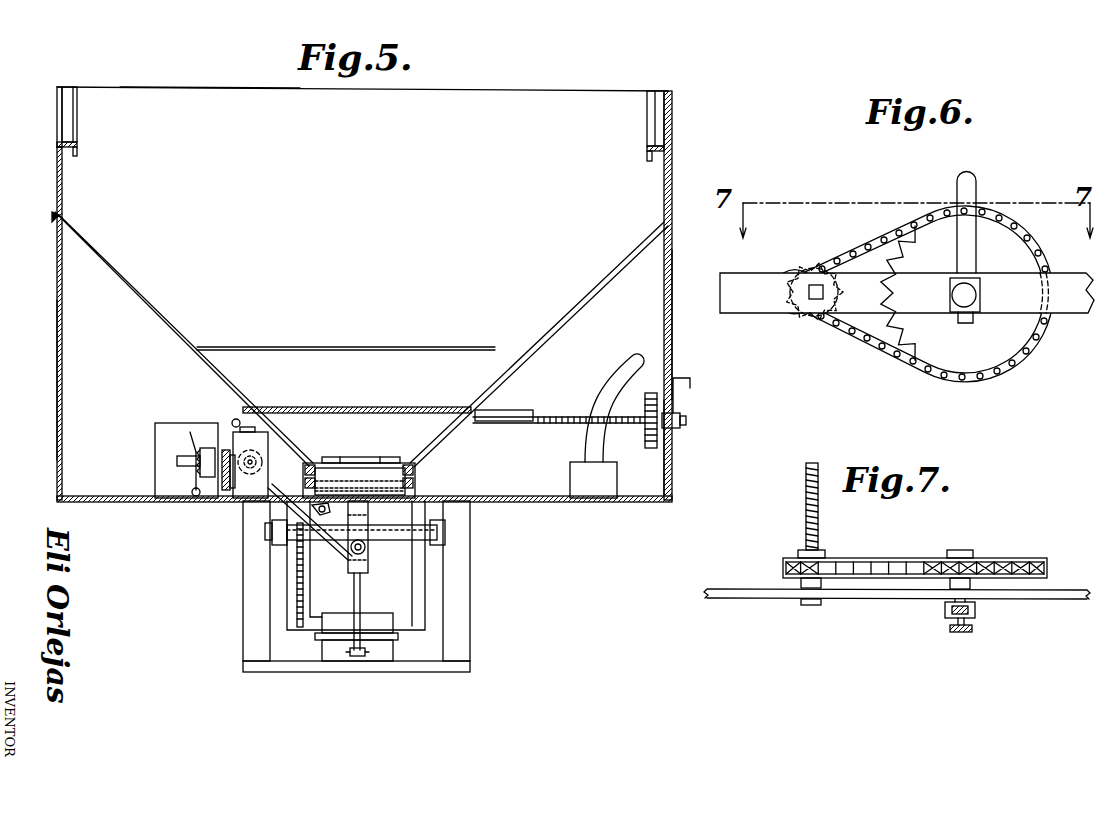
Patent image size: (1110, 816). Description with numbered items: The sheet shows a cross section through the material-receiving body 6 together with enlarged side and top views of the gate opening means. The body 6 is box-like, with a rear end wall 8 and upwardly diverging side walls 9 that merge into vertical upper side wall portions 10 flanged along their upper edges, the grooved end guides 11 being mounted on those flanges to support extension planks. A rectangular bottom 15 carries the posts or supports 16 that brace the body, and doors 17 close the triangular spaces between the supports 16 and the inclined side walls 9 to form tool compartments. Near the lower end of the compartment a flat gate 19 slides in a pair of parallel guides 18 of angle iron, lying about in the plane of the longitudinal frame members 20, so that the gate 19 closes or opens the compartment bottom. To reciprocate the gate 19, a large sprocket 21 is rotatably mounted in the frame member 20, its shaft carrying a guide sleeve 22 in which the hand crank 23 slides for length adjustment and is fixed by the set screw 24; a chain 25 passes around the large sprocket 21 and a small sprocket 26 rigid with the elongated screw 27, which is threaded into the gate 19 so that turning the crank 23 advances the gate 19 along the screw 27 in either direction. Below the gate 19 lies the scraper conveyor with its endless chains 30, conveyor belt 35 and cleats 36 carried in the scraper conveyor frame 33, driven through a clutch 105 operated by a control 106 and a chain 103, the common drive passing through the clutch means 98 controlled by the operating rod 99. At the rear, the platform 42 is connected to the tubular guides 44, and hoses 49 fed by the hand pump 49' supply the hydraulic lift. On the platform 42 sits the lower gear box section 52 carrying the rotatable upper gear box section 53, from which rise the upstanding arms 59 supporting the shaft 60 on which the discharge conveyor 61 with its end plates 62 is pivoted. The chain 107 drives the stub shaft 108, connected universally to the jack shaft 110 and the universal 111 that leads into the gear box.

In FIG. 5, the material-receiving body 6 is at (125, 78).
In FIG. 5, the rear end wall 8 is at (200, 96).
In FIG. 5, the side walls 9 is at (138, 296).
In FIG. 5, the side walls 10 is at (61, 192).
In FIG. 5, the grooved end guides 11 is at (58, 113).
In FIG. 5, the rectangular bottom 15 is at (120, 501).
In FIG. 5, the posts or supports 16 is at (672, 336).
In FIG. 5, the doors 17 is at (57, 381).
In FIG. 5, the parallel guides 18 is at (366, 450).
In FIG. 5, the gate 19 is at (358, 407).
In FIG. 5, the frame members 20 is at (672, 445).
In FIG. 6, the frame members 20 is at (768, 315).
In FIG. 7, the frame members 20 is at (748, 598).
In FIG. 6, the large sprocket 21 is at (934, 358).
In FIG. 7, the large sprocket 21 is at (945, 558).
In FIG. 5, the guide sleeve 22 is at (681, 426).
In FIG. 6, the guide sleeve 22 is at (950, 292).
In FIG. 7, the guide sleeve 22 is at (945, 612).
In FIG. 5, the hand crank 23 is at (690, 380).
In FIG. 6, the hand crank 23 is at (977, 252).
In FIG. 7, the hand crank 23 is at (976, 612).
In FIG. 5, the set screw 24 is at (687, 419).
In FIG. 6, the set screw 24 is at (980, 297).
In FIG. 7, the set screw 24 is at (956, 633).
In FIG. 5, the chain 25 is at (645, 436).
In FIG. 6, the chain 25 is at (870, 243).
In FIG. 7, the chain 25 is at (890, 558).
In FIG. 6, the small sprocket 26 is at (832, 291).
In FIG. 7, the small sprocket 26 is at (783, 566).
In FIG. 5, the elongated screw 27 is at (551, 417).
In FIG. 6, the elongated screw 27 is at (809, 292).
In FIG. 7, the elongated screw 27 is at (806, 503).
In FIG. 5, the endless chains 30 is at (392, 465).
In FIG. 5, the scraper conveyor frame 33 is at (416, 482).
In FIG. 5, the conveyor belt 35 is at (320, 462).
In FIG. 5, the cleats 36 is at (340, 457).
In FIG. 5, the platform 42 is at (300, 672).
In FIG. 5, the tubular guides 44 is at (243, 612).
In FIG. 5, the hoses 49 is at (614, 401).
In FIG. 5, the hand pump 49' is at (610, 480).
In FIG. 5, the lower gear box section 52 is at (393, 653).
In FIG. 5, the upper gear box section 53 is at (386, 613).
In FIG. 5, the upstanding arms 59 is at (287, 580).
In FIG. 5, the shaft 60 is at (268, 528).
In FIG. 5, the discharge conveyor 61 is at (398, 541).
In FIG. 5, the end plates 62 is at (287, 536).
In FIG. 5, the clutch means 98 is at (233, 462).
In FIG. 5, the operating rod 99 is at (236, 420).
In FIG. 5, the chain 103 is at (218, 490).
In FIG. 5, the clutch 105 is at (198, 456).
In FIG. 5, the control 106 is at (188, 436).
In FIG. 5, the chain 107 is at (332, 546).
In FIG. 5, the stub shaft 108 is at (362, 543).
In FIG. 5, the jack shaft 110 is at (354, 600).
In FIG. 5, the universal 111 is at (350, 658).